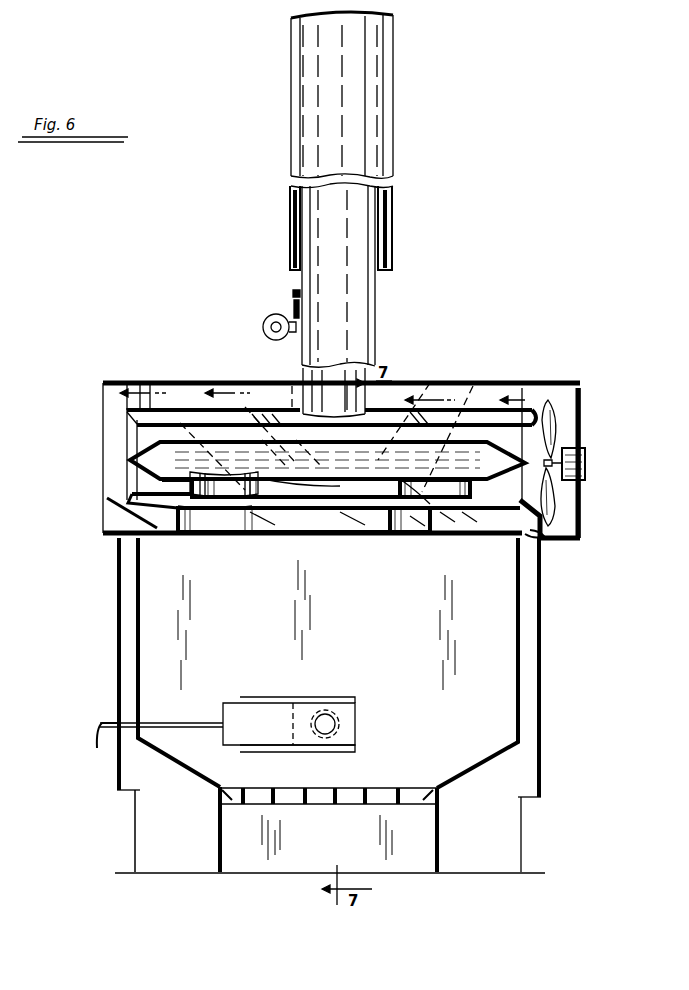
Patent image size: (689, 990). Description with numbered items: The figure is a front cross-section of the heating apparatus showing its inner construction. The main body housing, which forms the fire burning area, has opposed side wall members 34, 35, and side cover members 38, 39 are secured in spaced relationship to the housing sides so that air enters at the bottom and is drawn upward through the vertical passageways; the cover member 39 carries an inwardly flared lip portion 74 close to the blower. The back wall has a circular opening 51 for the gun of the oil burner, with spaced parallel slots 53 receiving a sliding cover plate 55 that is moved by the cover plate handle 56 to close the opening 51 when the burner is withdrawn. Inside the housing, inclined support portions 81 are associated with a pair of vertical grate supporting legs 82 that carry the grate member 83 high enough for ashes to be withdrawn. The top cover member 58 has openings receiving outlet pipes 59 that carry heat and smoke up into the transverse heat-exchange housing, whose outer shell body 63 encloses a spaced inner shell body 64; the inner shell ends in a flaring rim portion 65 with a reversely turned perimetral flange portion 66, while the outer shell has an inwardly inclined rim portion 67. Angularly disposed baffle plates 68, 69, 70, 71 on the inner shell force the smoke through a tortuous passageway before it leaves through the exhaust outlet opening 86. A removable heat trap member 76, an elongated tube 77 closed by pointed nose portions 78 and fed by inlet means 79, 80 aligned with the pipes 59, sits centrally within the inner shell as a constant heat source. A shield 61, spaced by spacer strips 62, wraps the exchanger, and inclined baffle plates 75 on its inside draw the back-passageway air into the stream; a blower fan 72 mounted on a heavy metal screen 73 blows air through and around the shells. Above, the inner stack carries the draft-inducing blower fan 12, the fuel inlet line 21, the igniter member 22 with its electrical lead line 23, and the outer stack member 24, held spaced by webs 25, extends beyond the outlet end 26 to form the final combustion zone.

The blower fan 12 is at (255, 322).
The fuel inlet line 21 is at (300, 335).
The igniter member 22 is at (294, 289).
The electrical lead line 23 is at (294, 306).
The outer stack member 24 is at (290, 186).
The webs 25 is at (385, 273).
The outlet end of inner stack member 26 is at (362, 50).
The side wall member 34 is at (134, 815).
The side wall member 35 is at (522, 822).
The side cover member 38 is at (118, 612).
The side cover member 39 is at (541, 612).
The circular opening 51 is at (325, 746).
The spaced parallel slots 53 is at (358, 708).
The cover plate 55 is at (235, 738).
The cover plate handle 56 is at (105, 723).
The top cover member 58 is at (488, 528).
The outlet pipes 59 is at (254, 528).
The shield 61 is at (478, 383).
The spacer strips 62 is at (148, 383).
The outer shell body 63 is at (244, 410).
The inner shell body 64 is at (250, 408).
The flaring rim portion 65 is at (130, 411).
The perimetral flange portion 66 is at (135, 383).
The inclined rim portion 67 is at (540, 395).
The baffle plate 68 is at (204, 382).
The baffle plate 69 is at (272, 408).
The baffle plate 70 is at (460, 385).
The baffle plate 71 is at (428, 392).
The blower fan 72 is at (558, 398).
The metal screen 73 is at (582, 520).
The inwardly flared lip portion 74 is at (544, 538).
The inclined baffle plates 75 is at (110, 520).
The heat trap member 76 is at (175, 468).
The elongated tube 77 is at (175, 486).
The pointed nose portion 78 is at (152, 452).
The inlet means 79 is at (192, 528).
The inlet means 80 is at (412, 500).
The inclined support portions 81 is at (185, 765).
The grate supporting legs 82 is at (218, 832).
The grate member 83 is at (415, 805).
The exhaust outlet opening 86 is at (415, 403).